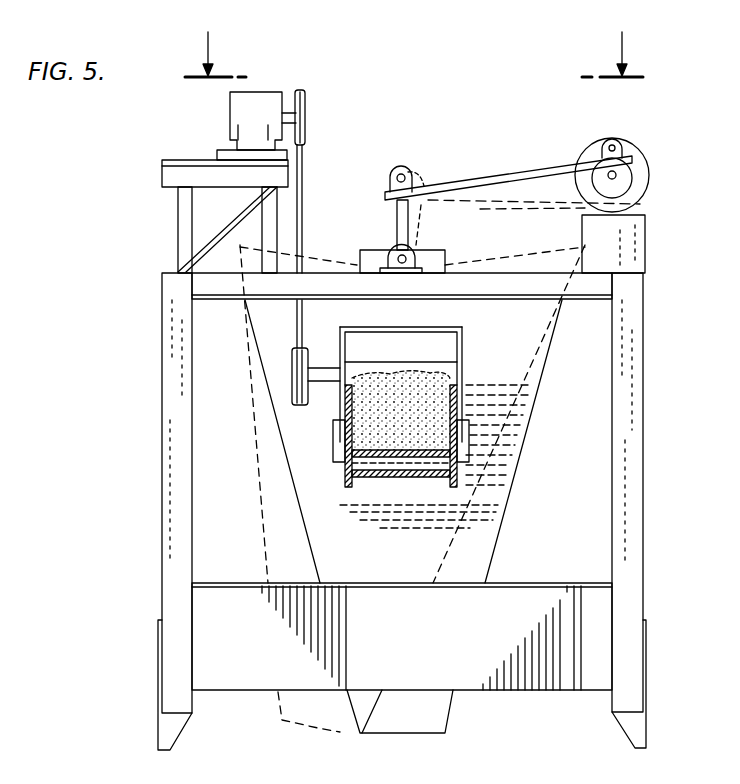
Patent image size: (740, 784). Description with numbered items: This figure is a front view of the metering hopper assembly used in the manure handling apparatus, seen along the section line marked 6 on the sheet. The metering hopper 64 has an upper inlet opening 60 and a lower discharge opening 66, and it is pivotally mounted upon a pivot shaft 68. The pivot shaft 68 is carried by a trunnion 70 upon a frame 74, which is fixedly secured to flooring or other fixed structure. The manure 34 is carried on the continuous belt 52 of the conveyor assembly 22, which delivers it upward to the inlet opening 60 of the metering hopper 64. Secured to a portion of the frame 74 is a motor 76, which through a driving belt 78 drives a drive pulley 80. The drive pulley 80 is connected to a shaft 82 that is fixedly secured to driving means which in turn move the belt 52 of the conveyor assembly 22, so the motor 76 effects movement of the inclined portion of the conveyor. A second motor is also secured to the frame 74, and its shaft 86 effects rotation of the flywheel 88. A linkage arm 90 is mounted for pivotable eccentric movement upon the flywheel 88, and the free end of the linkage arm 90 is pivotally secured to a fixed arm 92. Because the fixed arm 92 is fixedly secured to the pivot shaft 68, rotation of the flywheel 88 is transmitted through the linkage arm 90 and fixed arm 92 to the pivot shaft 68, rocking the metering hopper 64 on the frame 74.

The section line 6- 6 is at (414, 41).
The conveyor assembly 22 is at (450, 378).
The manure 34 is at (370, 433).
The continuous belt 52 is at (297, 497).
The inlet opening 60 is at (463, 447).
The metering hopper 64 is at (268, 553).
The discharge opening 66 is at (318, 728).
The pivot shaft 68 is at (388, 251).
The trunnion 70 is at (416, 258).
The frame 74 is at (612, 290).
The motor 76 is at (235, 107).
The driving belt 78 is at (303, 171).
The drive pulley 80 is at (293, 380).
The shaft 82 is at (328, 387).
The shaft 86 is at (625, 172).
The flywheel 88 is at (648, 181).
The linkage arm 90 is at (525, 172).
The fixed arm 92 is at (397, 217).